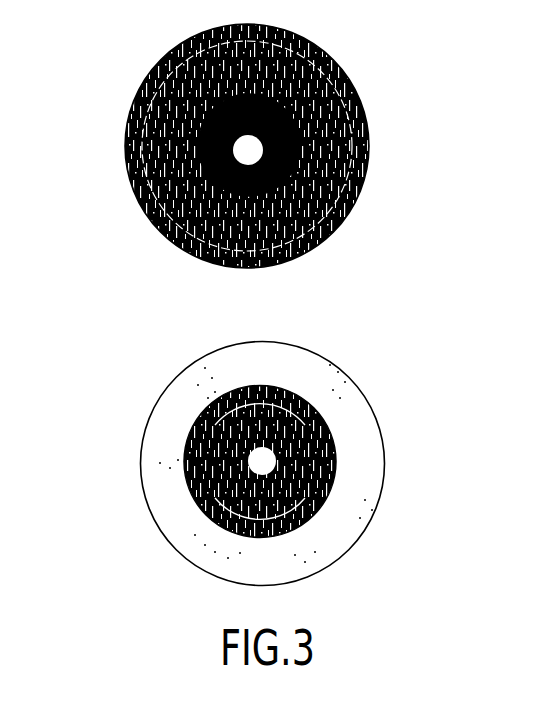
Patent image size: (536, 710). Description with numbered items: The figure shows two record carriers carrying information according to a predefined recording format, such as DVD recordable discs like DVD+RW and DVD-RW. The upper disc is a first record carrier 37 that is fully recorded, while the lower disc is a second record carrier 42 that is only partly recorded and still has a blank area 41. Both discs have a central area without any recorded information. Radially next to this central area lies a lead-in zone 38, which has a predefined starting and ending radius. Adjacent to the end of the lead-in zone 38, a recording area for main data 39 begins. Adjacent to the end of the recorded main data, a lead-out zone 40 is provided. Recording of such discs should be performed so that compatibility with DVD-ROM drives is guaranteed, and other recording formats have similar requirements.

The first record carrier 37 is at (322, 52).
The lead-in zone 38 is at (215, 402).
The recording area for main data 39 is at (260, 388).
The lead-out zone 40 is at (355, 202).
The blank area 41 is at (366, 442).
The second record carrier 42 is at (377, 502).